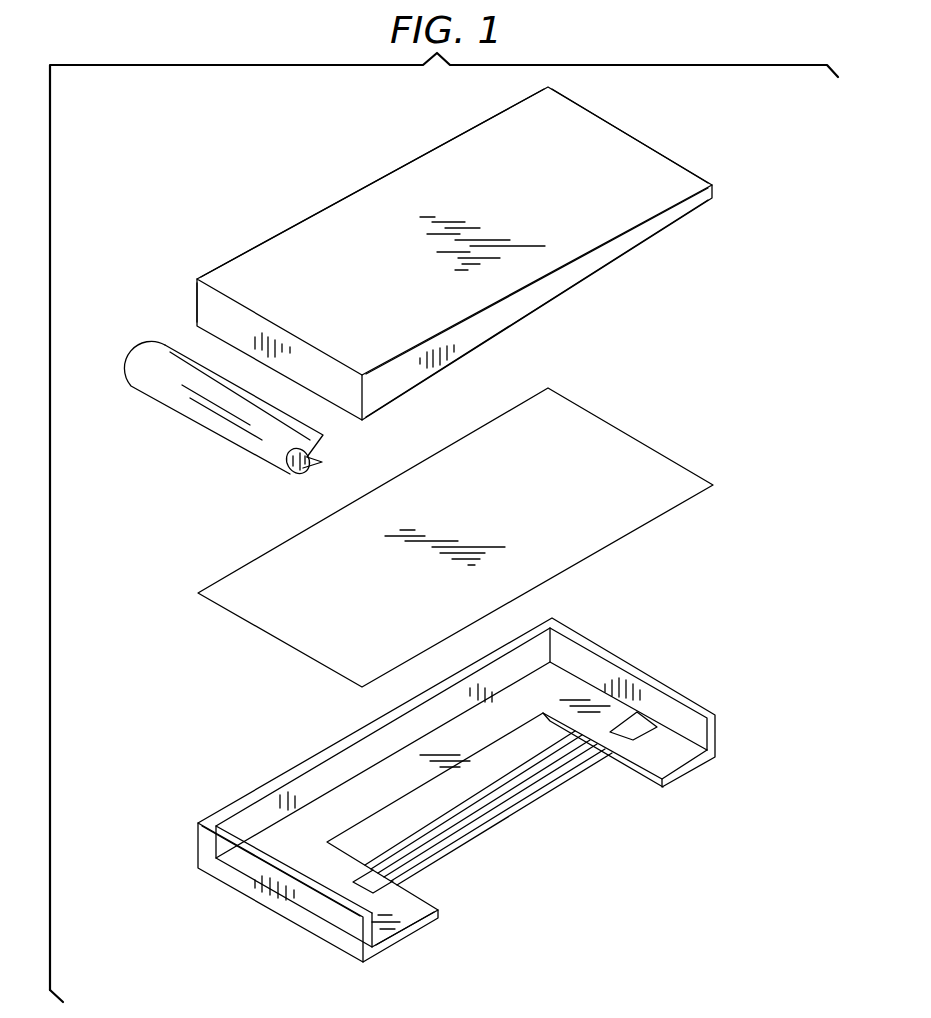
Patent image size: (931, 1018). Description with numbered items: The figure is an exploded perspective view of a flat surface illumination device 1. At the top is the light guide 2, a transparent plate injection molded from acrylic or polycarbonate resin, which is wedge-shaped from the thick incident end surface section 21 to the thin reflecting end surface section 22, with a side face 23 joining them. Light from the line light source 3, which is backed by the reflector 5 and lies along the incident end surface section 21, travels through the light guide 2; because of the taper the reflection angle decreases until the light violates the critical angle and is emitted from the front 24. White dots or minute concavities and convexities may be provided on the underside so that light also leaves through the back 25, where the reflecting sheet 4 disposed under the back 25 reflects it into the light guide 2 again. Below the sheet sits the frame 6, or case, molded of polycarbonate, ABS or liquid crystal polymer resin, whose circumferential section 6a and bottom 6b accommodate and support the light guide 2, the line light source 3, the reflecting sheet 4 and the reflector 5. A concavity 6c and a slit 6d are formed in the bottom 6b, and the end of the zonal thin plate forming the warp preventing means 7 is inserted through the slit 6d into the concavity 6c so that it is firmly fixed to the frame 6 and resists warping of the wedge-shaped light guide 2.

The backlight unit 1 is at (426, 116).
The light guide 2 is at (377, 200).
The line light source 3 is at (302, 461).
The reflecting sheet 4 is at (613, 442).
The reflector 5 is at (162, 355).
The frame 6 is at (233, 890).
The circumferential section 6a is at (290, 902).
The bottom 6b is at (397, 922).
The concavity 6c is at (393, 880).
The slit 6d is at (625, 743).
The warp preventing means 7 is at (507, 817).
The incident end surface section 21 is at (209, 310).
The reflecting end surface section 22 is at (638, 143).
The side face of light guide plate 23 is at (535, 297).
The front 24 is at (468, 131).
The back 25 is at (638, 247).